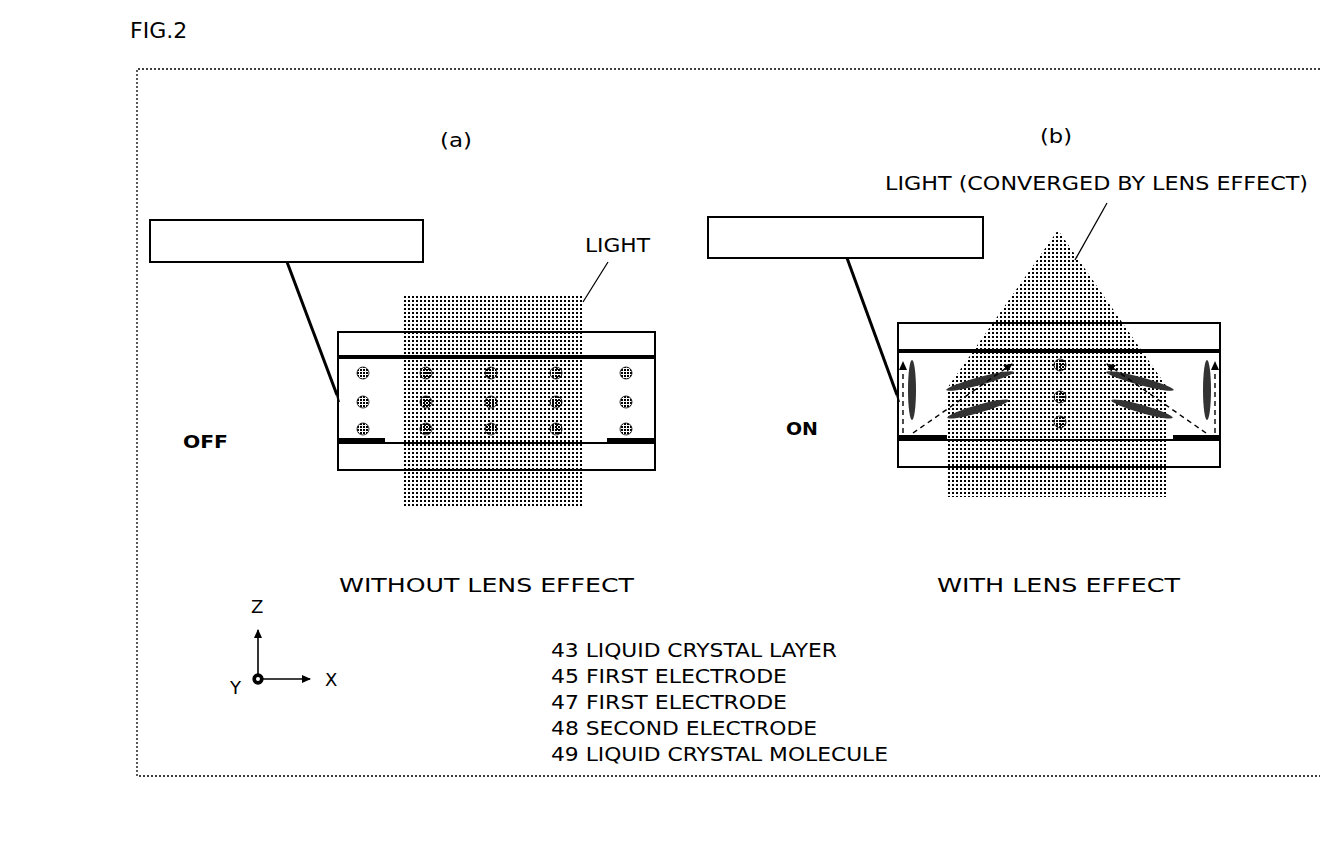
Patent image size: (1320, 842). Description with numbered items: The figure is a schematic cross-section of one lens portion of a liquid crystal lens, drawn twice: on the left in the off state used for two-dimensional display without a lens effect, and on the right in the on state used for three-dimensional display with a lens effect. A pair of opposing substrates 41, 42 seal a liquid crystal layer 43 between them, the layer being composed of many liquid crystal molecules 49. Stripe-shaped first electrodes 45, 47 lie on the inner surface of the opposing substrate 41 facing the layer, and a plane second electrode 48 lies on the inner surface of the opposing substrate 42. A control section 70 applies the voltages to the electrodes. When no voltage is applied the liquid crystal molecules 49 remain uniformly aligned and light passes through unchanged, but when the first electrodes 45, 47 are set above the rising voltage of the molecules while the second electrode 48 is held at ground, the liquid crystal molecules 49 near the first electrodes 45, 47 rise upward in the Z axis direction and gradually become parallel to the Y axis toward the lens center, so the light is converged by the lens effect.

The opposing substrate 41 is at (650, 457).
The opposing substrate 42 is at (650, 337).
The liquid crystal layer 43 is at (650, 402).
The first electrode 45 is at (352, 447).
The first electrode 47 is at (632, 445).
The second electrode 48 is at (485, 352).
The liquid crystal molecule 49 is at (426, 430).
The control section 70 is at (566, 309).